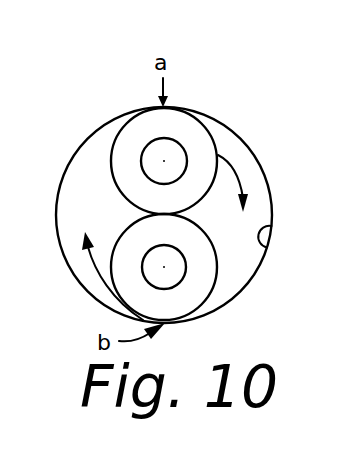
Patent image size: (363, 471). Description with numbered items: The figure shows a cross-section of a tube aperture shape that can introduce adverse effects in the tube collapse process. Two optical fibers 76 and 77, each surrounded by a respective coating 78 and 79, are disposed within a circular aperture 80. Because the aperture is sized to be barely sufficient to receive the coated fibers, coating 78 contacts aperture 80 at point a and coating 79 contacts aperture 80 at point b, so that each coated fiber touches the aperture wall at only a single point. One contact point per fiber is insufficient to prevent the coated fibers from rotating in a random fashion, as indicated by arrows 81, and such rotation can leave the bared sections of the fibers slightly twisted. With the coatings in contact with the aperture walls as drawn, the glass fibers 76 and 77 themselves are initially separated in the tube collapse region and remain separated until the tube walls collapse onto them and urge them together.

The optical fiber 76 is at (158, 152).
The optical fiber 77 is at (163, 278).
The coating 78 is at (188, 133).
The coating 79 is at (203, 272).
The aperture 80 is at (267, 248).
The arrows 81 is at (233, 172).